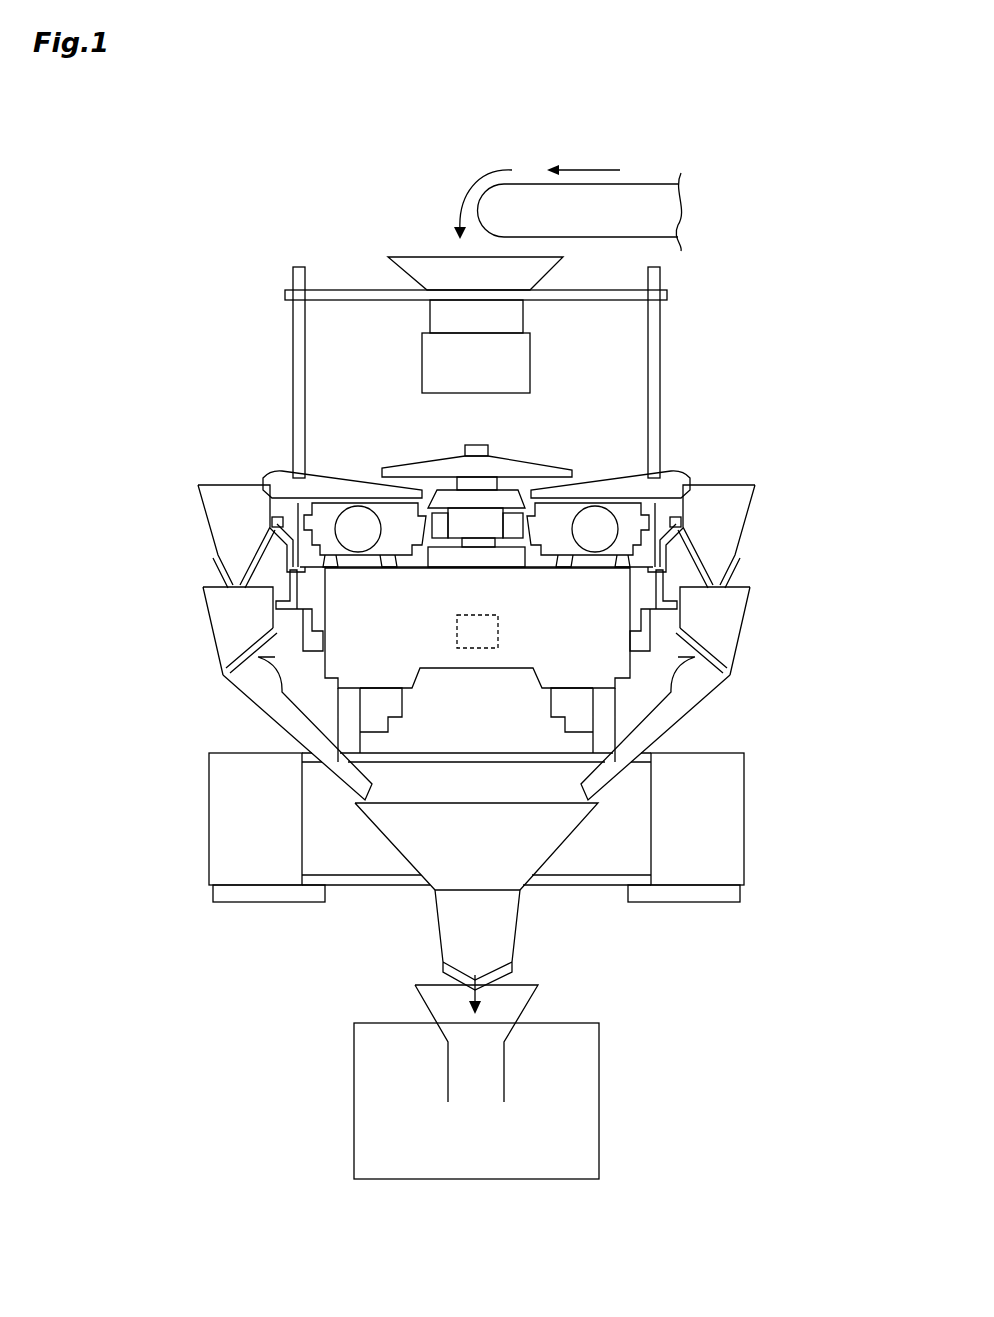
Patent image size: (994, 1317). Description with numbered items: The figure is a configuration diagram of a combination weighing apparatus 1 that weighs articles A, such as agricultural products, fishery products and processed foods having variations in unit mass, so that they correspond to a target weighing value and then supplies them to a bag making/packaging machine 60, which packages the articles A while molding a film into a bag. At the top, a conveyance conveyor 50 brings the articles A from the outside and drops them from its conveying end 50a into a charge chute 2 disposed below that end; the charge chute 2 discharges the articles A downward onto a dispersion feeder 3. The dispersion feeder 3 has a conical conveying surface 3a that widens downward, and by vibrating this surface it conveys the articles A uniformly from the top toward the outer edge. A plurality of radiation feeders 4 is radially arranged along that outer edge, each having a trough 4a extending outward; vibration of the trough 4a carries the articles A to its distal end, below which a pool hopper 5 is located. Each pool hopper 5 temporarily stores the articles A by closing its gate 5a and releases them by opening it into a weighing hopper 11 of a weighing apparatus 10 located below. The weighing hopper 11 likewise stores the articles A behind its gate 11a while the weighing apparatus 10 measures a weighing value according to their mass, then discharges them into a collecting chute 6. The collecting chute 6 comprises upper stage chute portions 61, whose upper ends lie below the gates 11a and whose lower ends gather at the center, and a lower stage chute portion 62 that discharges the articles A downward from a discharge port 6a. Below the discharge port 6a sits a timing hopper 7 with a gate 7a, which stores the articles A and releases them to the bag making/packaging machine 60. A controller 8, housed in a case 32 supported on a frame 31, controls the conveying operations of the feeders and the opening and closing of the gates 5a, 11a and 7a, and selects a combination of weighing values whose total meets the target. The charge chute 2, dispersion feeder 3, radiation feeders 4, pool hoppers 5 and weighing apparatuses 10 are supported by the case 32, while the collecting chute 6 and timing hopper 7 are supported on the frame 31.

The combination weighing apparatus 1 is at (232, 162).
The charge chute 2 is at (424, 253).
The dispersion feeder 3 is at (528, 466).
The conveying surface 3a is at (410, 462).
The radiation feeders 4 is at (270, 478).
The trough 4a is at (312, 480).
The pool hoppers 5 is at (200, 511).
The gate 5a is at (218, 570).
The weighing apparatuses 10 is at (196, 601).
The weighing hopper 11 is at (215, 630).
The gate 11a is at (240, 655).
The collecting chute 6 is at (481, 808).
The upper stage chute portions 61 is at (270, 712).
The lower stage chute portion 62 is at (547, 845).
The discharge port 6a is at (462, 896).
The timing hopper 7 is at (508, 934).
The gate 7a is at (443, 986).
The controller 8 is at (469, 650).
The case 32 is at (493, 658).
The frame 31 is at (745, 808).
The conveyance conveyor 50 is at (640, 196).
The conveying end 50a is at (488, 208).
The bag making/packaging machine 60 is at (590, 1088).
The articles A is at (461, 186).